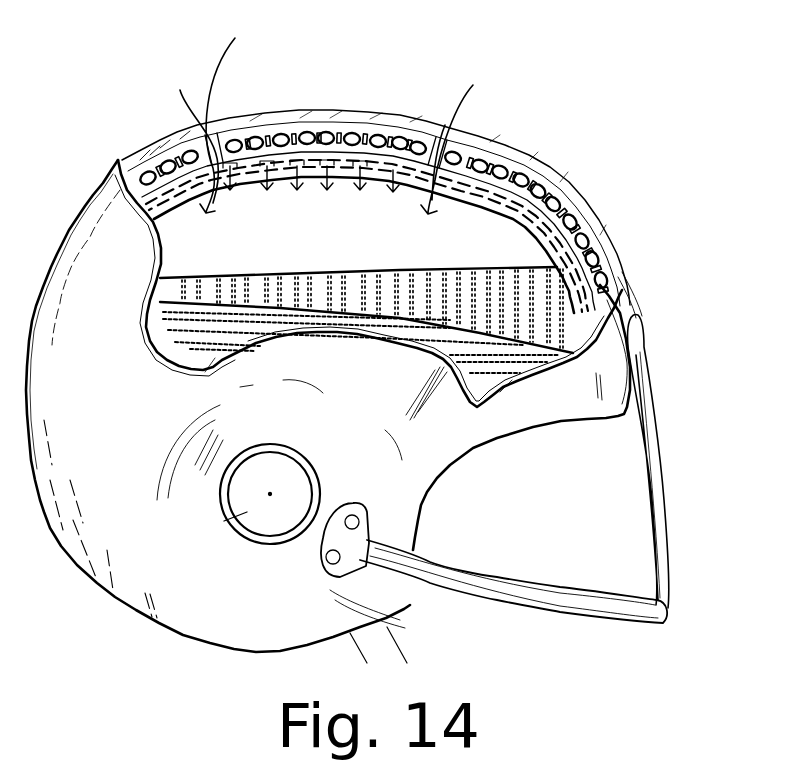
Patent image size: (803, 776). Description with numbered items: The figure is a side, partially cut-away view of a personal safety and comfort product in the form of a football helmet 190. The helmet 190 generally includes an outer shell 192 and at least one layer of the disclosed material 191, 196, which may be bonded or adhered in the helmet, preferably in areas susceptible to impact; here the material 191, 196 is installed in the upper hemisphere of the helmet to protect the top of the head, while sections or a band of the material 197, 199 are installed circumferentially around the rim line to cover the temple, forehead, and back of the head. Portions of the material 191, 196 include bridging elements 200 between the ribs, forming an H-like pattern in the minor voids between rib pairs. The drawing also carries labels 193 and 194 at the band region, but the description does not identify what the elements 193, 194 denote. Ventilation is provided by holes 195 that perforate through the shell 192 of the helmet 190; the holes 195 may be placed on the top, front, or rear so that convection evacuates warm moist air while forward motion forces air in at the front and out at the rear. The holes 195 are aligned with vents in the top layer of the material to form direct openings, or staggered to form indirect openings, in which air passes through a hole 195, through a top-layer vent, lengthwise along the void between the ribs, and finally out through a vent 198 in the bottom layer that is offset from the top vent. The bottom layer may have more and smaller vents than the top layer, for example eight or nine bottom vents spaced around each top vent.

The helmet 190 is at (533, 417).
The material 191 is at (517, 165).
The outer shell 192 is at (168, 135).
The inner dashed layer of padding band 193 is at (625, 205).
The shell layer at band end 194 is at (138, 165).
The holes 195 is at (326, 113).
The material 196 is at (163, 193).
The material 197 is at (348, 308).
The vent 198 is at (307, 180).
The material 199 is at (250, 273).
The bridging elements 200 is at (553, 205).